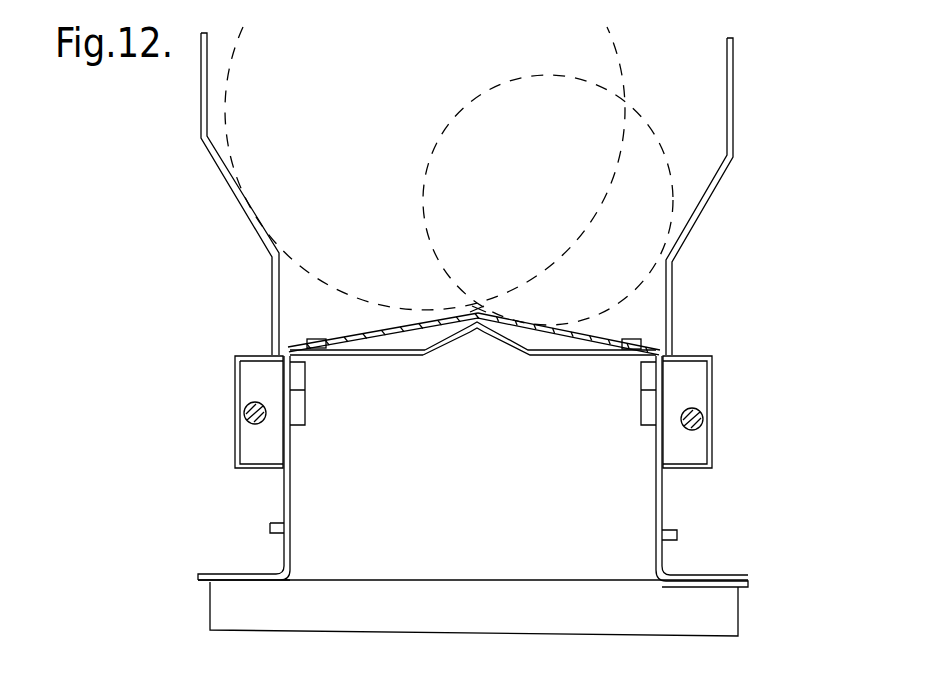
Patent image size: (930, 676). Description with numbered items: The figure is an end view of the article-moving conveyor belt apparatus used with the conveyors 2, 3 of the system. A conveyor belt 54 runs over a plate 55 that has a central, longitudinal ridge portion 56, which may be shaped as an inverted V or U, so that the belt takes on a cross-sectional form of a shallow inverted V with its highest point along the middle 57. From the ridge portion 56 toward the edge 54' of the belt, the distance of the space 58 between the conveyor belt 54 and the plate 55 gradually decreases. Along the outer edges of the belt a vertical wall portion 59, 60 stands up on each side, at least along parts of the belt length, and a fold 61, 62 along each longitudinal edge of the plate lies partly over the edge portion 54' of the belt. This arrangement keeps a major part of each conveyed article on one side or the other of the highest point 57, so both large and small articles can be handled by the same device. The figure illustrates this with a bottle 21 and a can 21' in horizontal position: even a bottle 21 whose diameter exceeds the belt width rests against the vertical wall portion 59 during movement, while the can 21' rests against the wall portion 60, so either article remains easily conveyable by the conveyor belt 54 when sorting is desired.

The conveyor 2 is at (668, 508).
The conveyor 3 is at (668, 508).
The bottle 21 is at (448, 164).
The can 21' is at (568, 200).
The conveyor belt 54 is at (387, 298).
The edge of the belt 54' is at (568, 368).
The plate 55 is at (375, 357).
The central longitudinal ridge portion 56 is at (448, 356).
The highest point of the conveyor belt 57 is at (495, 340).
The space between the conveyor belt and the plate 58 is at (556, 356).
The vertical wall portion 59 is at (232, 190).
The vertical wall portion 60 is at (706, 197).
The fold 61 is at (305, 343).
The fold 62 is at (640, 348).